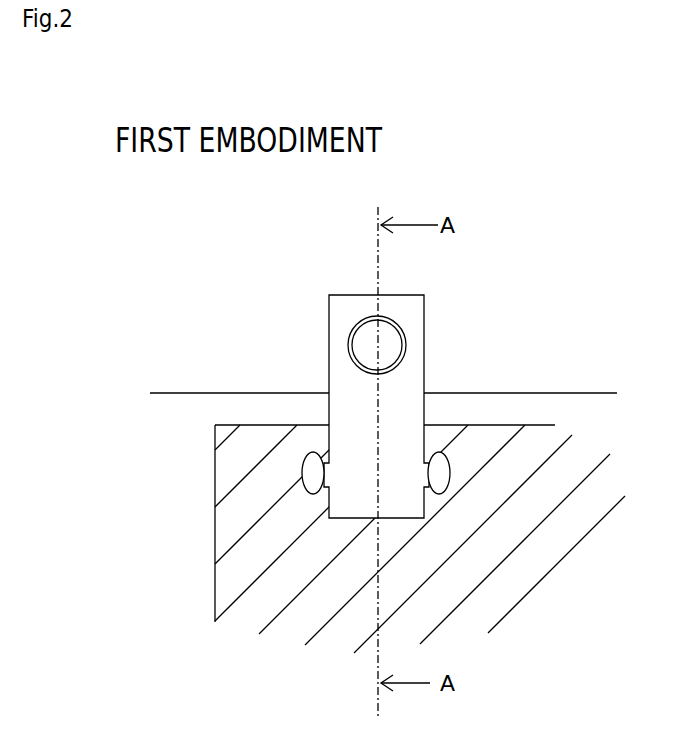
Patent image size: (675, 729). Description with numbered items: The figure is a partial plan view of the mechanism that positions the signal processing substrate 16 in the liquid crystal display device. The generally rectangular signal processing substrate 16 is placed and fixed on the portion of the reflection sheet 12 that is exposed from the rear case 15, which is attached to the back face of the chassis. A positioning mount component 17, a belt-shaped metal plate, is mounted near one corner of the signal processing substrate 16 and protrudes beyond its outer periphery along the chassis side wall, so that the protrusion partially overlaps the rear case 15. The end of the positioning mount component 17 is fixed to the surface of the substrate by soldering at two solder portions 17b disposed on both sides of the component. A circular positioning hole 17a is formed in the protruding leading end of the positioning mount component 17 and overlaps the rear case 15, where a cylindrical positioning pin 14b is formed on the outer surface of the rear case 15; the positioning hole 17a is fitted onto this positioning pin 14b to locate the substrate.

The reflection sheet 12 is at (180, 553).
The positioning pin 14b is at (390, 342).
The rear case 15 is at (231, 342).
The signal processing substrate 16 is at (253, 522).
The positioning mount component 17 is at (402, 385).
The positioning hole 17a is at (362, 318).
The solder portion 17b is at (321, 466).